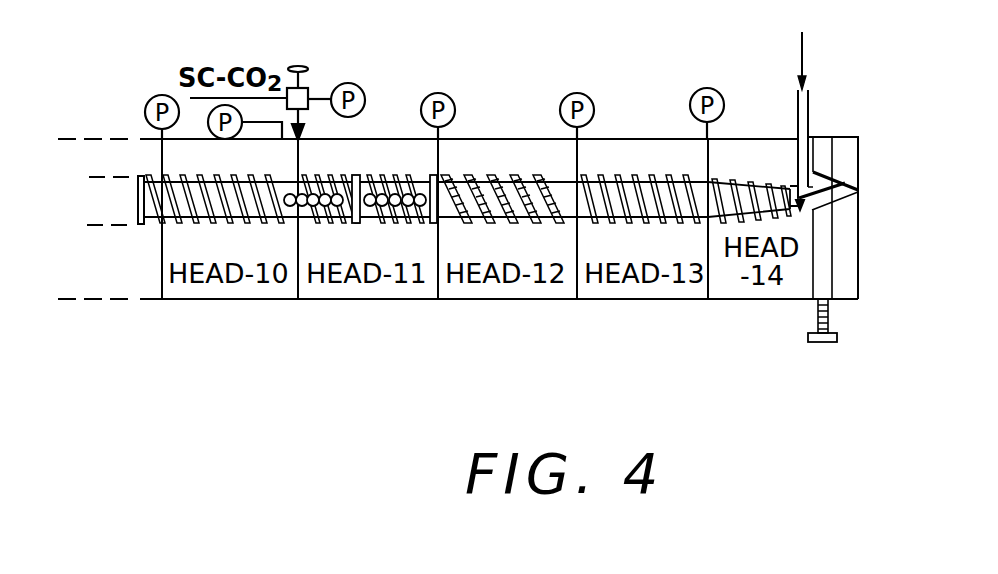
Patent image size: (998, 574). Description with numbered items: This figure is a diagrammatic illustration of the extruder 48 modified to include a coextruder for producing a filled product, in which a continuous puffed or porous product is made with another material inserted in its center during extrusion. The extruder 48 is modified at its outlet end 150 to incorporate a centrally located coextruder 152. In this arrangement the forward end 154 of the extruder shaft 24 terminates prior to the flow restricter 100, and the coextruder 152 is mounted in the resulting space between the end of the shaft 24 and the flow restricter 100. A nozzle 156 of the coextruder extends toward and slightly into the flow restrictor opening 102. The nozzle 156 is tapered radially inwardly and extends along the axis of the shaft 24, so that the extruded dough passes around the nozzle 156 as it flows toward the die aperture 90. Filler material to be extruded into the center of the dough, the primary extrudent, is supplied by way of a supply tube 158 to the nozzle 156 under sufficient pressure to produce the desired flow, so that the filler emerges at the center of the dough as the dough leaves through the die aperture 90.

The extruder 48 is at (496, 139).
The extruder shaft 24 is at (635, 175).
The forward end 154 is at (776, 186).
The supply tube 158 is at (810, 102).
The outlet end 150 is at (862, 108).
The nozzle 156 is at (814, 170).
The die aperture 90 is at (858, 186).
The flow restrictor opening 102 is at (813, 210).
The flow restricter 100 is at (822, 267).
The coextruder 152 is at (801, 212).